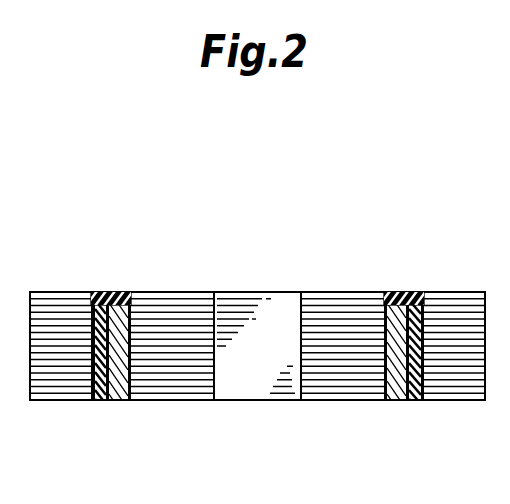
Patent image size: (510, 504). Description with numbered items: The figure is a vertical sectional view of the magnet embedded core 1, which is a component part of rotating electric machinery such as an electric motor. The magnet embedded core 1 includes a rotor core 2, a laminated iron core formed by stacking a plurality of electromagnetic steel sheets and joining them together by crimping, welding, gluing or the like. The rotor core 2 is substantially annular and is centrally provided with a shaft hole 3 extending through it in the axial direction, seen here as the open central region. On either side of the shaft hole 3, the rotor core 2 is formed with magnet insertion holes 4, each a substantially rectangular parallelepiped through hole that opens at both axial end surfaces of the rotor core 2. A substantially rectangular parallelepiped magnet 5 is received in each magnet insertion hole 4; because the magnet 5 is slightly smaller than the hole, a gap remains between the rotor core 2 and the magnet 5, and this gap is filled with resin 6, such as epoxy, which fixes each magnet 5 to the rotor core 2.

The magnet embedded core 1 is at (260, 312).
The rotor core 2 is at (346, 292).
The shaft hole 3 is at (274, 298).
The magnet insertion hole 4 is at (116, 386).
The magnet 5 is at (116, 292).
The resin 6 is at (101, 386).